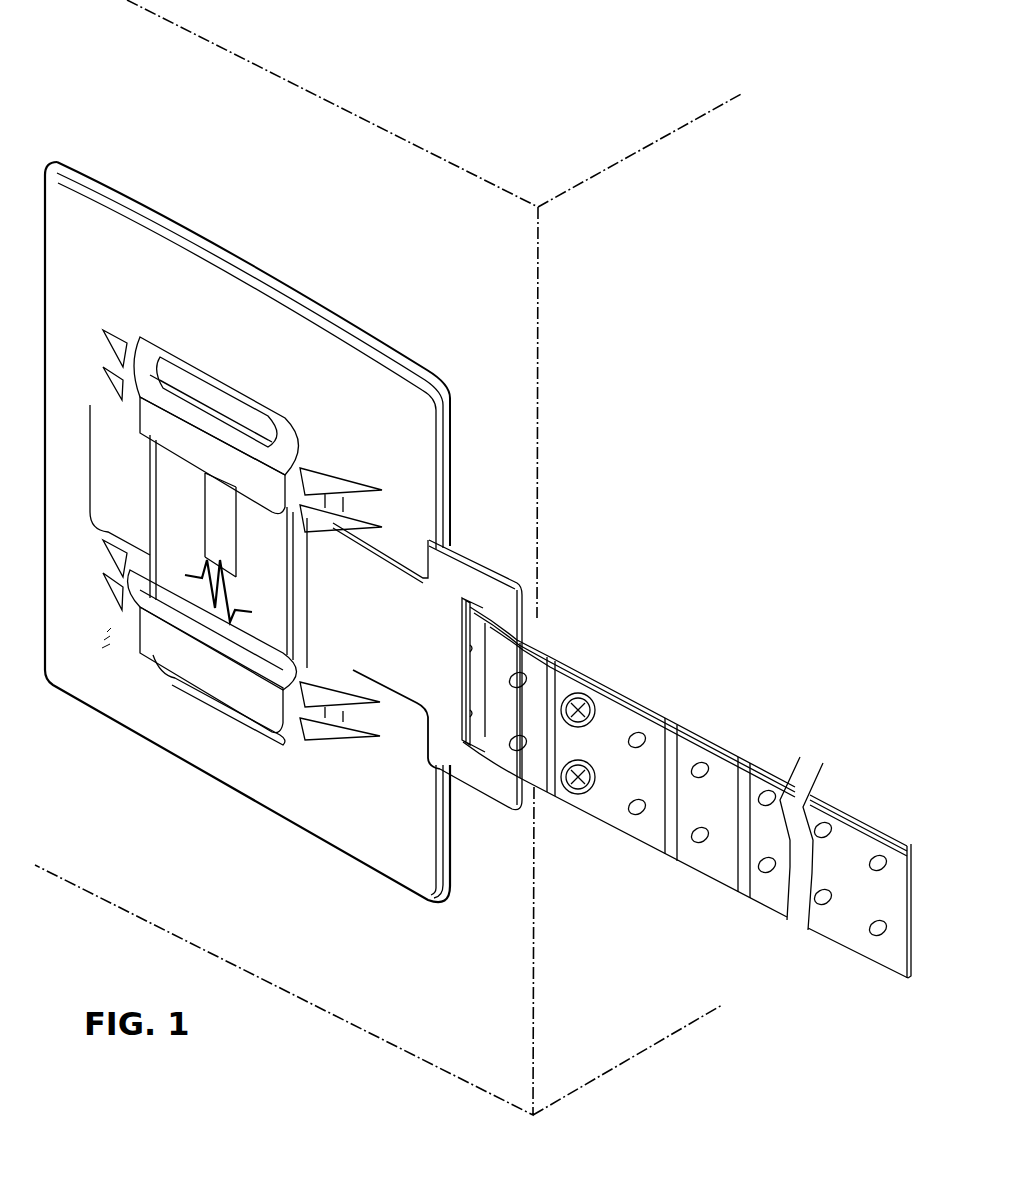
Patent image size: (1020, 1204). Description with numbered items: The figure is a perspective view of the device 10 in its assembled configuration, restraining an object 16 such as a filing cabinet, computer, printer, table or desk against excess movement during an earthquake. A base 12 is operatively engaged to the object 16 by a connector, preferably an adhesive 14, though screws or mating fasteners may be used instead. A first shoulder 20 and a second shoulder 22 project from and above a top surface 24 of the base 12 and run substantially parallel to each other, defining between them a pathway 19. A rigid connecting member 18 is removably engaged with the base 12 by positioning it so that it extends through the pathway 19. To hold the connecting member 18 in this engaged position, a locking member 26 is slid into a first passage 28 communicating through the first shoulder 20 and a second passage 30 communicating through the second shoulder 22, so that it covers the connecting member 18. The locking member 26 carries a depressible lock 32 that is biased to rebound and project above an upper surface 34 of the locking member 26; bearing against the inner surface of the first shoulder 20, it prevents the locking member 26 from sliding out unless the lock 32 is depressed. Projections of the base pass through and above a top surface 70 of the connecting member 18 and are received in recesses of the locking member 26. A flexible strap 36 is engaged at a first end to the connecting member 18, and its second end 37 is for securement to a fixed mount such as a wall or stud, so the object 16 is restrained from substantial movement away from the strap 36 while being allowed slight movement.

The device 10 is at (655, 469).
The base 12 is at (110, 262).
The adhesive 14 is at (318, 303).
The object 16 is at (400, 188).
The connecting member 18 is at (505, 587).
The pathway 19 is at (373, 545).
The first shoulder 20 is at (112, 405).
The second shoulder 22 is at (300, 697).
The top surface 24 is at (88, 663).
The locking member 26 is at (322, 430).
The first passage 28 is at (128, 388).
The second passage 30 is at (140, 630).
The depressible lock 32 is at (233, 590).
The upper surface 34 is at (186, 527).
The strap 36 is at (688, 753).
The second end 37 is at (887, 823).
The top surface 70 is at (425, 653).